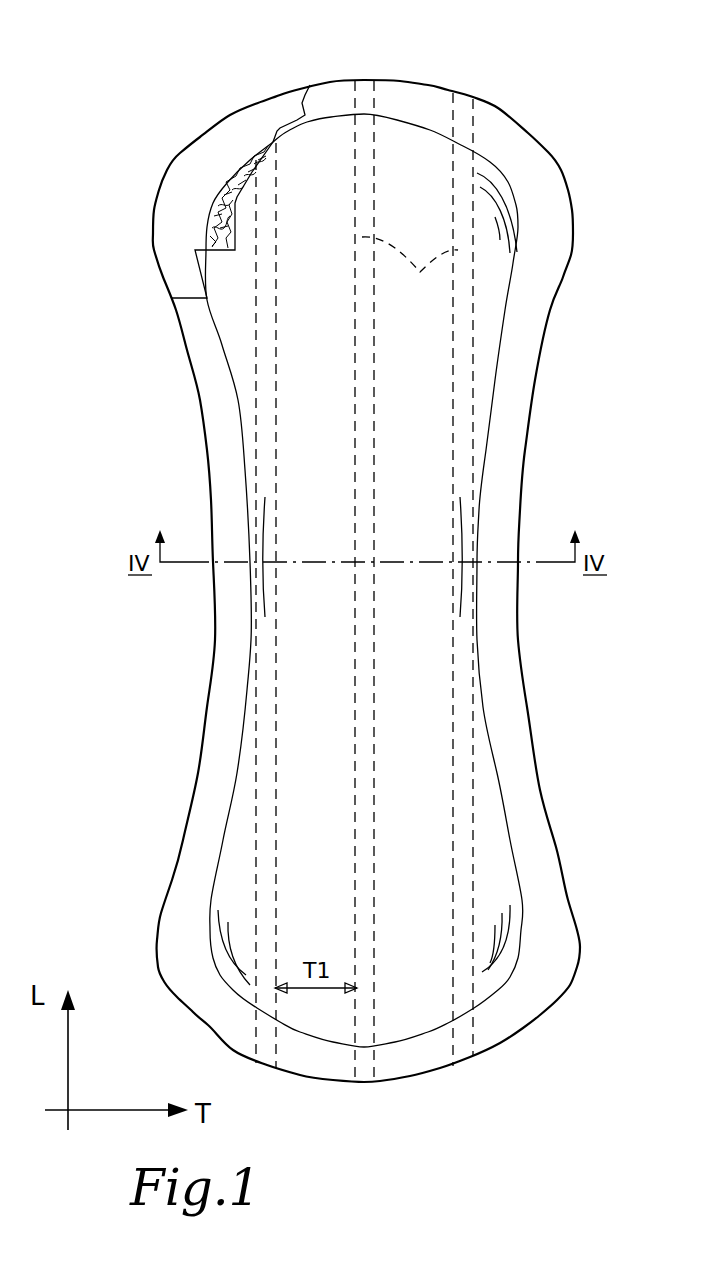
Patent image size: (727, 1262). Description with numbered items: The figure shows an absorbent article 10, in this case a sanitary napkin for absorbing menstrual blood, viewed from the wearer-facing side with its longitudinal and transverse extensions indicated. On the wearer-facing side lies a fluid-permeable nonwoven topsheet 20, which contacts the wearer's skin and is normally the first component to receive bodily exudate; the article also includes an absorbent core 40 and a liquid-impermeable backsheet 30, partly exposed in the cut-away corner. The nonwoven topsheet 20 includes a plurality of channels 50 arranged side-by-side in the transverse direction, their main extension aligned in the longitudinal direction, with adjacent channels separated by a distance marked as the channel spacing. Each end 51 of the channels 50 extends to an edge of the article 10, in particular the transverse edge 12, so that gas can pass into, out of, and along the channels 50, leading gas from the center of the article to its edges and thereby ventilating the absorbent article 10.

The absorbent article 10 is at (606, 55).
The transverse edge 12 is at (405, 1080).
The nonwoven topsheet 20 is at (203, 310).
The backsheet 30 is at (183, 203).
The absorbent core 40 is at (208, 233).
The channels 50 is at (174, 392).
The end of channel 51 is at (362, 78).